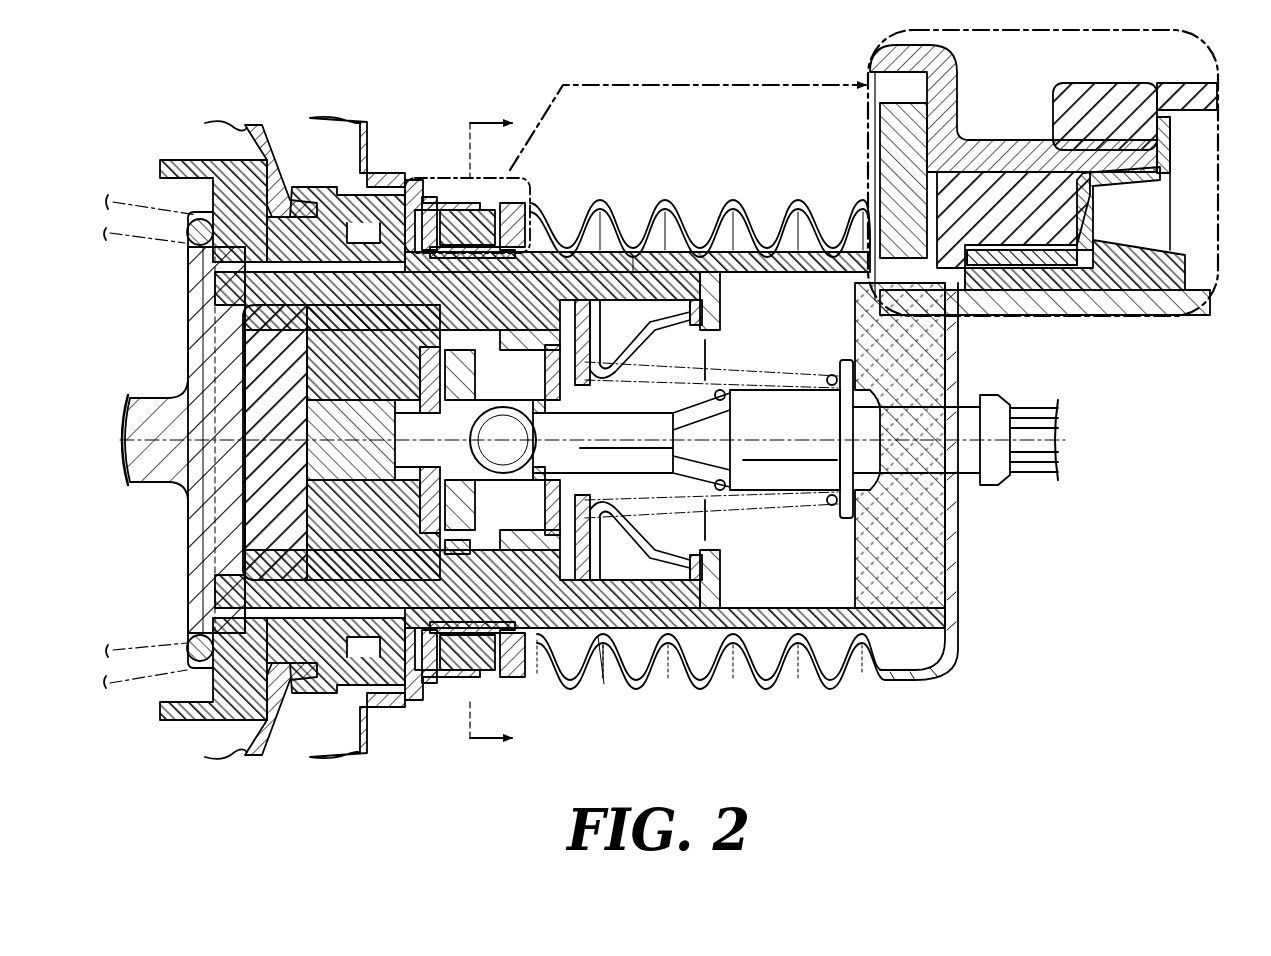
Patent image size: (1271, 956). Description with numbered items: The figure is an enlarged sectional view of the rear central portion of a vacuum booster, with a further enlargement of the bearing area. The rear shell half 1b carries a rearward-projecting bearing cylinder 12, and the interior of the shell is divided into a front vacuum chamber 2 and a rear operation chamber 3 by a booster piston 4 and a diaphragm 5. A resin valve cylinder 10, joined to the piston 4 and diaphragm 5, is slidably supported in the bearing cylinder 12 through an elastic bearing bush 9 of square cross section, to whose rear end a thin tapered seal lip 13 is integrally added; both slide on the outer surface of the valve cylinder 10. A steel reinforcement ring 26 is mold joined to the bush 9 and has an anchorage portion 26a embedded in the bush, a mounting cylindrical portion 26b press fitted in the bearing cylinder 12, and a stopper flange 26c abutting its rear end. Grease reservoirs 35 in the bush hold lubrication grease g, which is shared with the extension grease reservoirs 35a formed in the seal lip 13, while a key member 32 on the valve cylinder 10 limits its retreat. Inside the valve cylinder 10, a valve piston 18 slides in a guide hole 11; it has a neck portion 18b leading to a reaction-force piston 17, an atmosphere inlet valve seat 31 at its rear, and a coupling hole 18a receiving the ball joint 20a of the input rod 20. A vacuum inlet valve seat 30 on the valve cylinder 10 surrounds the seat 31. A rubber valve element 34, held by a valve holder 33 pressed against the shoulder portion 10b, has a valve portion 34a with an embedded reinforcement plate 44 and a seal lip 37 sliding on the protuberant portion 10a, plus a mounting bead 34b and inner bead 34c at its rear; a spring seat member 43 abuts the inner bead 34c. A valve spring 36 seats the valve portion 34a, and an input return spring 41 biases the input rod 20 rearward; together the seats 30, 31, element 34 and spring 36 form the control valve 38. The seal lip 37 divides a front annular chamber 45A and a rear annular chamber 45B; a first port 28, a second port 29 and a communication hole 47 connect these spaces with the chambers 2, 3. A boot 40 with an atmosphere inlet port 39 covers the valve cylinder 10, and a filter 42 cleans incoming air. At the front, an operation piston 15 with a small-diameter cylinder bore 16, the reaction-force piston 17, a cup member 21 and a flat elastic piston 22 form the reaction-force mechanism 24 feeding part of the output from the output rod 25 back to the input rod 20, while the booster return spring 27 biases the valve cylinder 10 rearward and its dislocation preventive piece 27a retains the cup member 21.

The rear shell half 1b is at (365, 122).
The vacuum chamber 2 is at (130, 341).
The operation chamber 3 is at (311, 167).
The booster piston 4 is at (262, 127).
The diaphragm 5 is at (232, 126).
The bearing bush 9 is at (470, 225).
The valve cylinder 10 is at (623, 202).
The annular protuberant portion 10a is at (636, 232).
The annular shoulder portion 10b is at (720, 292).
The guide hole 11 is at (457, 440).
The bearing cylinder 12 is at (470, 205).
The seal lip 13 is at (495, 240).
The operation piston 15 is at (302, 350).
The small-diameter cylinder bore 16 is at (388, 372).
The reaction-force piston 17 is at (318, 414).
The valve piston 18 is at (487, 508).
The coupling hole 18a is at (532, 426).
The neck portion 18b is at (351, 460).
The input rod 20 is at (778, 450).
The ball joint 20a is at (516, 452).
The cup member 21 is at (218, 328).
The elastic piston 22 is at (265, 452).
The reaction-force mechanism 24 is at (255, 523).
The output rod 25 is at (147, 480).
The reinforcement ring 26 is at (1100, 192).
The anchorage portion 26a is at (1040, 252).
The mounting cylindrical portion 26b is at (1172, 195).
The stopper flange 26c is at (1168, 135).
The booster return spring 27 is at (148, 200).
The dislocation preventive piece 27a is at (192, 358).
The first port 28 is at (215, 270).
The second port 29 is at (445, 556).
The vacuum inlet valve seat 30 is at (557, 313).
The atmosphere inlet valve seat 31 is at (533, 333).
The key member 32 is at (422, 218).
The valve holder 33 is at (718, 592).
The valve element 34 is at (622, 505).
The valve portion 34a is at (558, 537).
The mounting bead 34b is at (717, 559).
The inner bead 34c is at (707, 539).
The grease reservoirs 35 is at (1042, 312).
The seal ring lip 35a is at (1062, 302).
The valve spring 36 is at (652, 370).
The seal lip 37 is at (605, 580).
The control valve 38 is at (627, 437).
The atmosphere inlet port 39 is at (960, 350).
The boot 40 is at (790, 200).
The input return spring 41 is at (793, 367).
The filter 42 is at (942, 526).
The spring seat member 43 is at (720, 336).
The reinforcement plate 44 is at (547, 366).
The front annular chamber 45A is at (726, 668).
The rear annular chamber 45B is at (628, 671).
The communication hole 47 is at (603, 686).
The lubrication grease g is at (1008, 306).